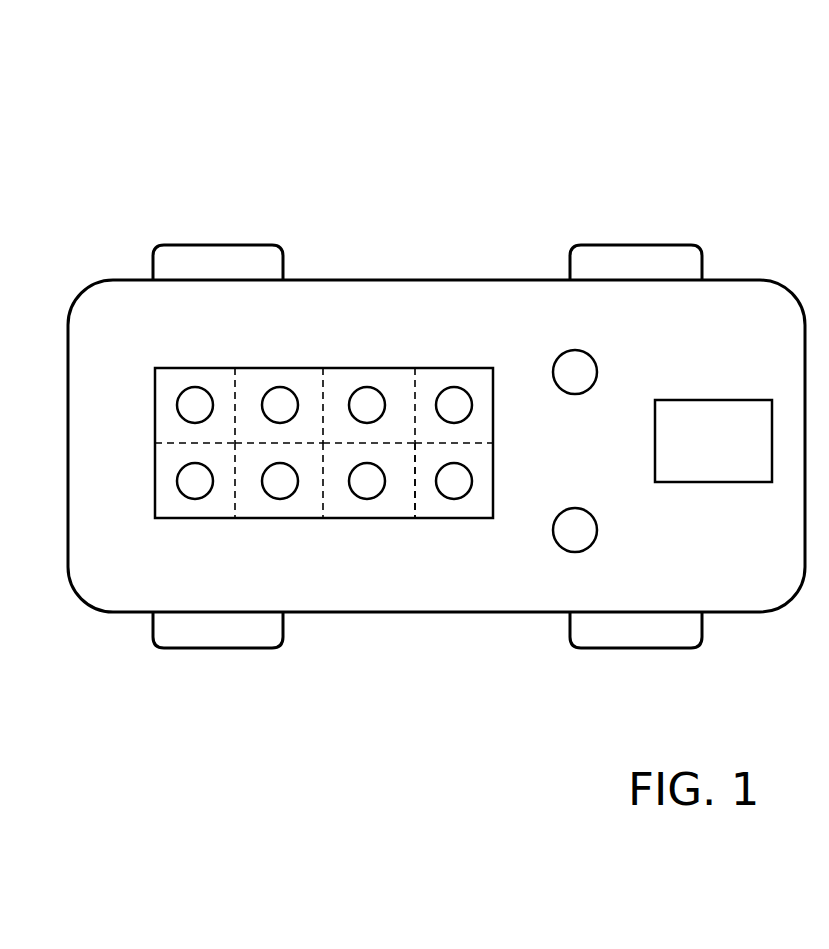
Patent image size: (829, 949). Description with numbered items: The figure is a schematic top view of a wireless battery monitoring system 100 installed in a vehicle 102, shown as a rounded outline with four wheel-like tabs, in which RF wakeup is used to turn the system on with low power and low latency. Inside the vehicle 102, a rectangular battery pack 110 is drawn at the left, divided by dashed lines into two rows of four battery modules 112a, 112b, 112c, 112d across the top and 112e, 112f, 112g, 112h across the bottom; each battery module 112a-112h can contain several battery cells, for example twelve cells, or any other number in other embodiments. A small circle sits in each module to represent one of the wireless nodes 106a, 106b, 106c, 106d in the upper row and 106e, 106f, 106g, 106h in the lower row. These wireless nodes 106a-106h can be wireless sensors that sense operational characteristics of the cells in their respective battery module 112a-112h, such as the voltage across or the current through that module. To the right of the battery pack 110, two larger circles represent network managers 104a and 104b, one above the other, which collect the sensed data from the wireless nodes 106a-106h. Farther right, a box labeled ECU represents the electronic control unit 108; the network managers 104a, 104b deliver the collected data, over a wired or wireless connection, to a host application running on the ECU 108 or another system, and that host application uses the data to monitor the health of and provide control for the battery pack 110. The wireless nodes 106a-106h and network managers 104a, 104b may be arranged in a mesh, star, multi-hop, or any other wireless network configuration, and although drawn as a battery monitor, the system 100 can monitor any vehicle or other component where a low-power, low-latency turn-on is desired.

The system 100 is at (685, 84).
The vehicle 102 is at (768, 319).
The network manager 104a is at (595, 364).
The network manager 104b is at (595, 527).
The wireless node 106a is at (193, 387).
The wireless node 106b is at (278, 387).
The wireless node 106c is at (367, 387).
The wireless node 106d is at (455, 387).
The wireless node 106e is at (190, 500).
The wireless node 106f is at (278, 500).
The wireless node 106g is at (365, 500).
The wireless node 106h is at (453, 500).
The electronic control unit (ECU) 108 is at (770, 426).
The battery pack 110 is at (494, 459).
The battery module 112a is at (172, 429).
The battery module 112b is at (312, 382).
The battery module 112c is at (398, 382).
The battery module 112d is at (467, 435).
The battery module 112e is at (170, 503).
The battery module 112f is at (309, 502).
The battery module 112g is at (397, 502).
The battery module 112h is at (475, 508).